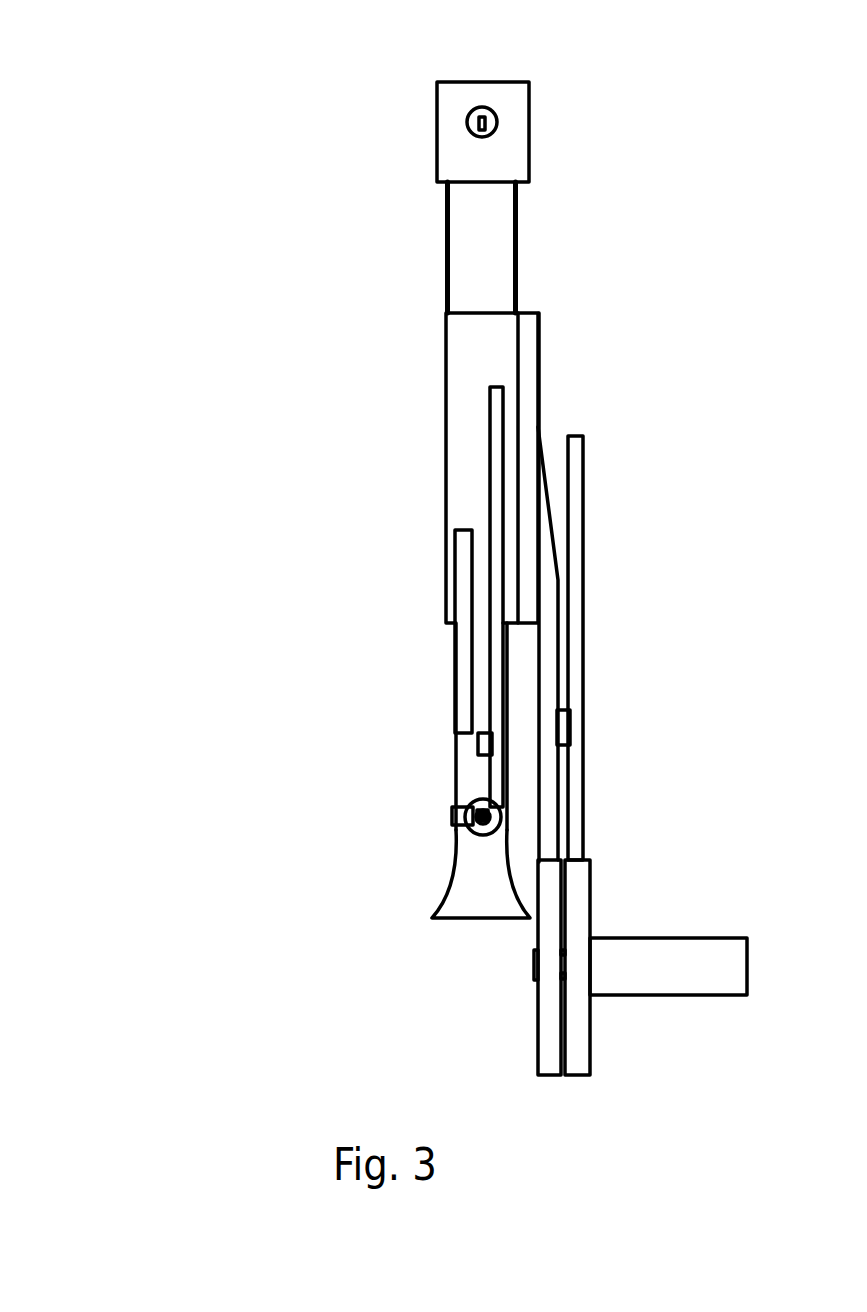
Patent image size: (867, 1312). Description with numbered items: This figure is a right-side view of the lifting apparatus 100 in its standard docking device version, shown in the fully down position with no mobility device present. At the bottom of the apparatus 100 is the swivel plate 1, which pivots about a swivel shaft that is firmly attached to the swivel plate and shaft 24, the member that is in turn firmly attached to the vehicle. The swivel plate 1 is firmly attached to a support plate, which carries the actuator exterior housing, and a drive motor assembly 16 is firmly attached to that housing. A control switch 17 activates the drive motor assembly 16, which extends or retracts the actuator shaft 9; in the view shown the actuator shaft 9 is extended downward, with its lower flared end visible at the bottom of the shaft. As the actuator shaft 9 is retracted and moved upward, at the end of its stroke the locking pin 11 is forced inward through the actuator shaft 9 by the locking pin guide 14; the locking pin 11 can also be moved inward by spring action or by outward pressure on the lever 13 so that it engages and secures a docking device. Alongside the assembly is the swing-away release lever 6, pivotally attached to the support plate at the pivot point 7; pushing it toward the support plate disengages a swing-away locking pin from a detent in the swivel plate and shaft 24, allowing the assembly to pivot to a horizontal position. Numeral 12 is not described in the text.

The lifting apparatus 100 is at (213, 78).
The swivel plate 1 is at (550, 1053).
The swing-away release lever 6 is at (578, 482).
The pivot point 7 is at (565, 732).
The actuator shaft 9 is at (486, 806).
The locking pin 11 is at (473, 817).
The stop block 12 is at (478, 742).
The lever 13 is at (493, 432).
The locking pin guide 14 is at (463, 627).
The drive motor assembly 16 is at (480, 280).
The control switch 17 is at (488, 132).
The swivel plate and shaft 24 is at (585, 900).